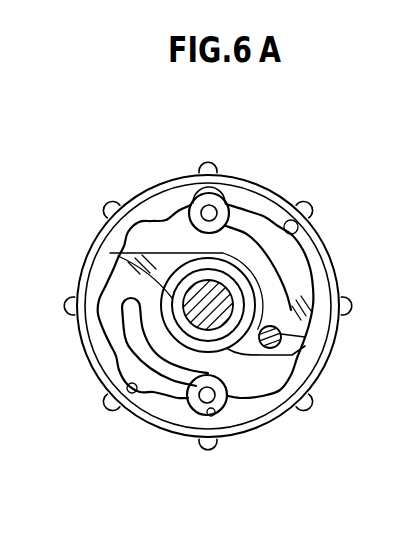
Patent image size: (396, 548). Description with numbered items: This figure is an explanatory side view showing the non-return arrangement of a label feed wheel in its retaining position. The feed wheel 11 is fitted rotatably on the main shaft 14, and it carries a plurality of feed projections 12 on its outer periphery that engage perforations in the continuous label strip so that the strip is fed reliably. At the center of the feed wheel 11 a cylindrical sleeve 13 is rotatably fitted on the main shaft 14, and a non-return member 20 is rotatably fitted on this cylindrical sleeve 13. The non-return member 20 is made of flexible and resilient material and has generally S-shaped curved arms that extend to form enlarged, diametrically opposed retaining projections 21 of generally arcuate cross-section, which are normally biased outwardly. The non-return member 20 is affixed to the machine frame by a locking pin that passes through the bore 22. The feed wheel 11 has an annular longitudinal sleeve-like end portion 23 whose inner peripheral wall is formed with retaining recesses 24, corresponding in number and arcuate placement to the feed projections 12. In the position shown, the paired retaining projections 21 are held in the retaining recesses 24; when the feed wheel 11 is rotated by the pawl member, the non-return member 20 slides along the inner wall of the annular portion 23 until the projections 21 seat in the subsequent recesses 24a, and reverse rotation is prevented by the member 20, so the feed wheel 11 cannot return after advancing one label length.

The feed wheel 11 is at (339, 272).
The feed projections 12 is at (306, 202).
The cylindrical sleeve 13 is at (242, 336).
The main shaft 14 is at (196, 290).
The non-return member 20 is at (114, 282).
The retaining projections 21 is at (195, 200).
The bore 22 is at (308, 339).
The annular sleeve-like end portion 23 is at (256, 200).
The retaining recesses 24 is at (225, 194).
The subsequent recesses 24a is at (298, 232).